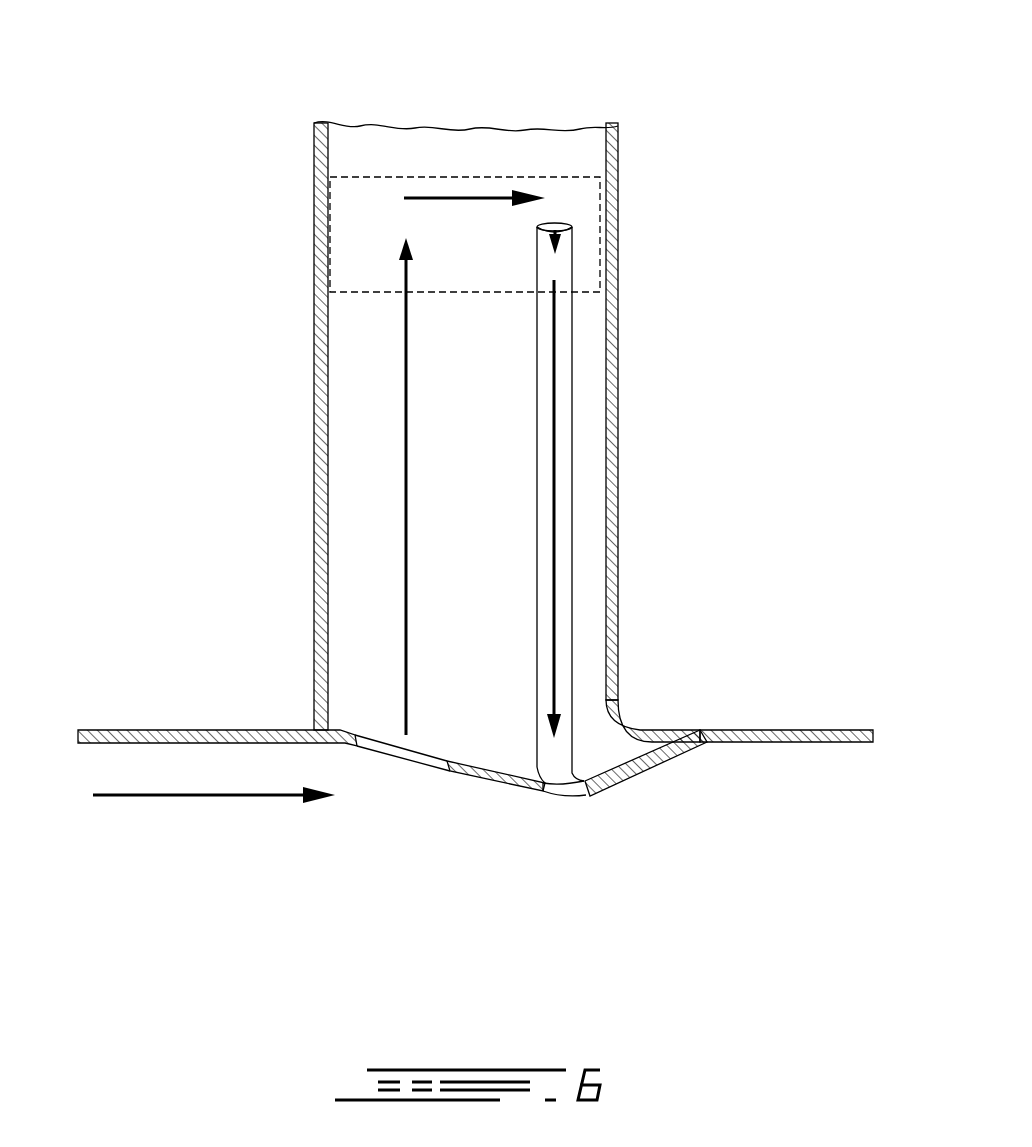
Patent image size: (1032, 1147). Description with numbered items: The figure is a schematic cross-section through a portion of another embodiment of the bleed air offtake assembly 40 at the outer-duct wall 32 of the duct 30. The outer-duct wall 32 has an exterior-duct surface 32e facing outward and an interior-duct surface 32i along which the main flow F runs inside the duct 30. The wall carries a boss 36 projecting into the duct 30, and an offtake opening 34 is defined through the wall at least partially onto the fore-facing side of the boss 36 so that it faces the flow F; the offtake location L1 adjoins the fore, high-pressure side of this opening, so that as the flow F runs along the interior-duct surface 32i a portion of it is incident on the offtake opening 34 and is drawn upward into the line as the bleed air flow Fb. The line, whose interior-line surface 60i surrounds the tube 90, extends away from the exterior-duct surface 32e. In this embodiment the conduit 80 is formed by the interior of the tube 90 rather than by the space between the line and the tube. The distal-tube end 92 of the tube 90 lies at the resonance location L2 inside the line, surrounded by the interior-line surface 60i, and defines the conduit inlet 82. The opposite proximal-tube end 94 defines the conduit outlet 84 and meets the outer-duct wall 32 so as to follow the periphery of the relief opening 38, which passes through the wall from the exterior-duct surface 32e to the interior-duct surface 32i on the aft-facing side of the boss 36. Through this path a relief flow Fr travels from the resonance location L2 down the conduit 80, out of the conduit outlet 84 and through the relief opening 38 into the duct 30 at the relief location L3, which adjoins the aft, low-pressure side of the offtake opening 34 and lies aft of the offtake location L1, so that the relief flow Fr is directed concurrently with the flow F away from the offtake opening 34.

The duct 30 is at (187, 943).
The outer-duct wall 32 is at (501, 742).
The exterior-duct surface 32e is at (501, 742).
The interior-duct surface 32i is at (830, 730).
The offtake opening 34 is at (436, 768).
The boss 36 is at (503, 790).
The relief opening 38 is at (553, 795).
The offtake assembly 40 is at (142, 118).
The interior-line surface 60i is at (328, 565).
The conduit 80 is at (556, 228).
The conduit inlet 82 is at (565, 227).
The conduit outlet 84 is at (583, 783).
The tube 90 is at (651, 502).
The distal-tube end 92 is at (649, 225).
The proximal-tube end 94 is at (654, 715).
The flow F is at (183, 797).
The bleed air flow Fb is at (405, 425).
The relief flow Fr is at (557, 512).
The offtake location L1 is at (320, 862).
The resonance location L2 is at (405, 178).
The relief location L3 is at (672, 850).